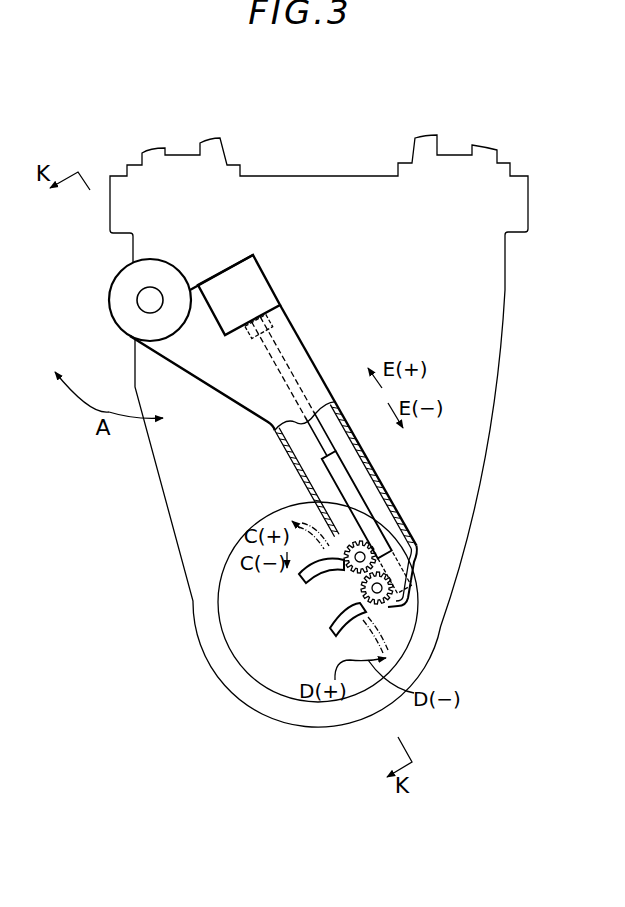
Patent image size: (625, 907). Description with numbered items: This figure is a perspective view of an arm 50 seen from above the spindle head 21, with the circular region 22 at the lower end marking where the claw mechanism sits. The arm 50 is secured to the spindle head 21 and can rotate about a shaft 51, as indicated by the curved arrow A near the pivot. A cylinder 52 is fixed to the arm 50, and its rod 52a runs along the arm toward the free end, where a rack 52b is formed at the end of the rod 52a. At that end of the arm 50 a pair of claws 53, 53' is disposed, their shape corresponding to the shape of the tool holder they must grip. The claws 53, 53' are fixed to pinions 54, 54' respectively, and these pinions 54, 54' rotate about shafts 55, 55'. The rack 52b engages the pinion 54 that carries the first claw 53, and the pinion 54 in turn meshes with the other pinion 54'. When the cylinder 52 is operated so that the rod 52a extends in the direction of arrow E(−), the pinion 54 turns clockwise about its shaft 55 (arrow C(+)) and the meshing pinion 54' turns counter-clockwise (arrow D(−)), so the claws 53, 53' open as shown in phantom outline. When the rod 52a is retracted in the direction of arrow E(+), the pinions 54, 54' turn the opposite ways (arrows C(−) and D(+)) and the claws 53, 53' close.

The spindle head 21 is at (190, 578).
The circular opening 22 is at (232, 647).
The arm 50 is at (213, 378).
The shaft 51 is at (130, 323).
The cylinder 52 is at (220, 283).
The rod 52a is at (300, 397).
The rack 52b is at (370, 523).
The claw 53 is at (293, 584).
The claw 53' is at (323, 641).
The pinion 54 is at (320, 526).
The pinion 54' is at (406, 590).
The shaft 55 is at (428, 544).
The shaft 55' is at (423, 573).